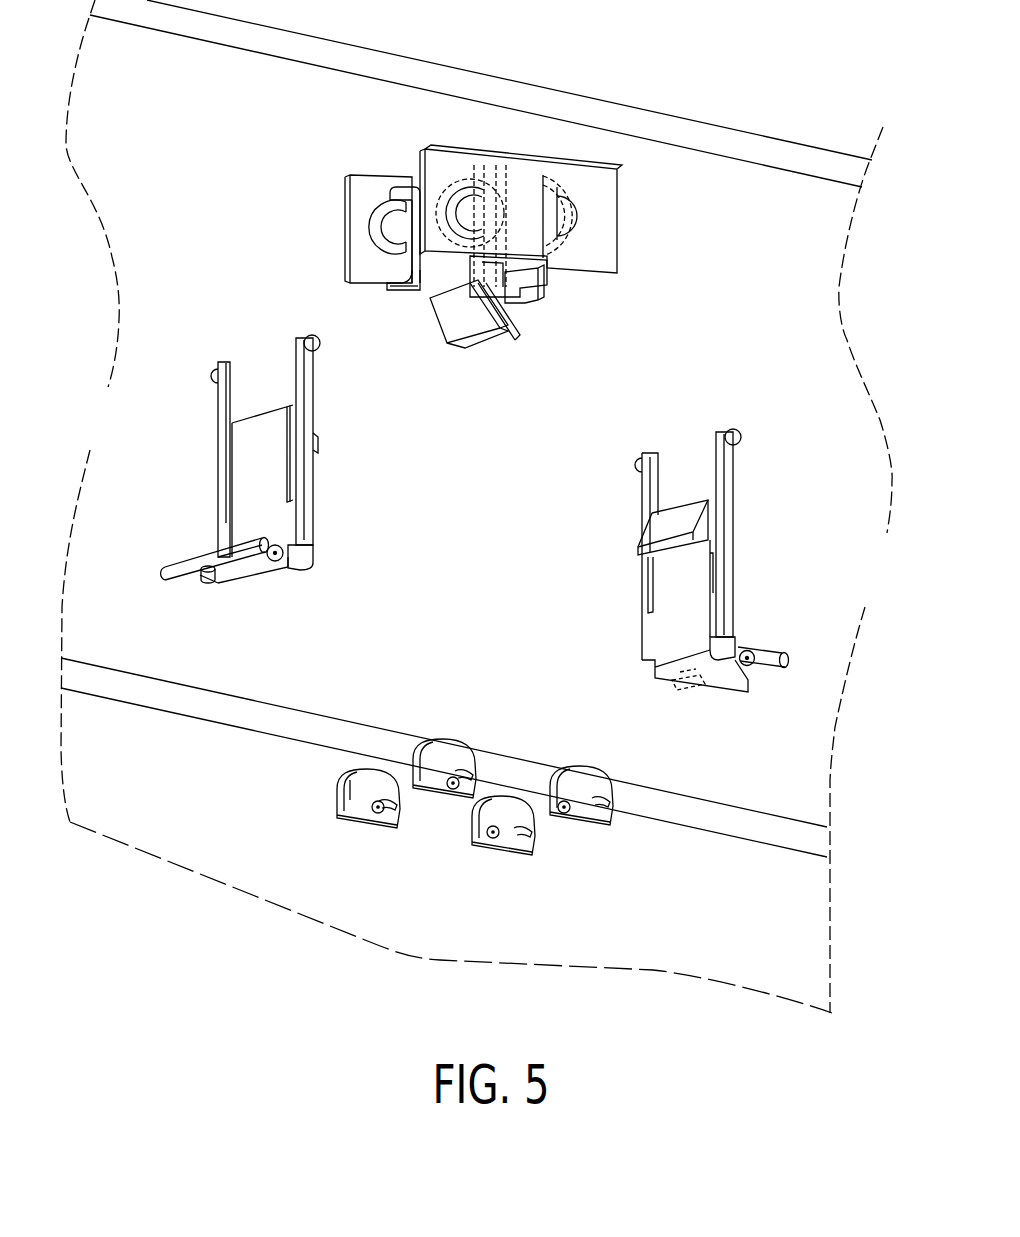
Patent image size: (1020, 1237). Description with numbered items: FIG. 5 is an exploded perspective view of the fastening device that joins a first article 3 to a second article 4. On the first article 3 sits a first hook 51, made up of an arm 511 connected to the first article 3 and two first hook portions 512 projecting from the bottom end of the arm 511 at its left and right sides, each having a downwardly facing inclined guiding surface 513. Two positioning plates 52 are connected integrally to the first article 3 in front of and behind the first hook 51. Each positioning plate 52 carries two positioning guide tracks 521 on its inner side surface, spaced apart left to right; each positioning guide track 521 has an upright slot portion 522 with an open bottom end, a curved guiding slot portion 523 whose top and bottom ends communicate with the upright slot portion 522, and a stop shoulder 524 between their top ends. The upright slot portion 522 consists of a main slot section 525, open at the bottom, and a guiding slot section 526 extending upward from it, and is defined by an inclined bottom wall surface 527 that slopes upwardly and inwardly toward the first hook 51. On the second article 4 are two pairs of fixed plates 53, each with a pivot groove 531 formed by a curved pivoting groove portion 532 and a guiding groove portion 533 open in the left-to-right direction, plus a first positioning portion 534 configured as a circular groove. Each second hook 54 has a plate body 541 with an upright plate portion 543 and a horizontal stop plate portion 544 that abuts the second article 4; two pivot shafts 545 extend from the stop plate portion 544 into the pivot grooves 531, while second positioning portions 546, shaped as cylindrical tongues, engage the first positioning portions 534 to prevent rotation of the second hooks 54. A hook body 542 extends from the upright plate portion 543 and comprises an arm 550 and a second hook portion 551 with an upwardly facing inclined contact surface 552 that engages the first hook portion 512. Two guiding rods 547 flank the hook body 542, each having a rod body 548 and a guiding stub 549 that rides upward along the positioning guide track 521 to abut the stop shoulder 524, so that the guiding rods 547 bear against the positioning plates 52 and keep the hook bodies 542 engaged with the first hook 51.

The first article 3 is at (683, 115).
The second article 4 is at (800, 876).
The first hook 51 is at (492, 340).
The arm 511 is at (537, 283).
The first hook portions 512 is at (510, 333).
The inclined guiding surface 513 is at (457, 330).
The positioning plates 52 is at (343, 182).
The positioning guide tracks 521 is at (514, 212).
The upright slot portion 522 is at (419, 231).
The curved guiding slot portion 523 is at (378, 216).
The stop shoulder 524 is at (416, 205).
The main slot section 525 is at (396, 291).
The guiding slot section 526 is at (403, 190).
The inclined bottom wall surface 527 is at (407, 234).
The fixed plates 53 is at (465, 780).
The pivot groove 531 is at (371, 810).
The curved pivoting groove portion 532 is at (373, 800).
The guiding groove portion 533 is at (345, 800).
The first positioning portion 534 is at (396, 812).
The second hooks 54 is at (211, 452).
The plate body 541 is at (738, 622).
The hook body 542 is at (684, 492).
The upright plate portion 543 is at (678, 625).
The horizontal stop plate portion 544 is at (758, 652).
The pivot shafts 545 is at (772, 668).
The second positioning portions 546 is at (673, 686).
The guiding rods 547 is at (648, 442).
The rod body 548 is at (730, 562).
The guiding stub 549 is at (636, 463).
The arm 550 is at (676, 580).
The second hook portion 551 is at (705, 528).
The inclined contact surface 552 is at (660, 530).